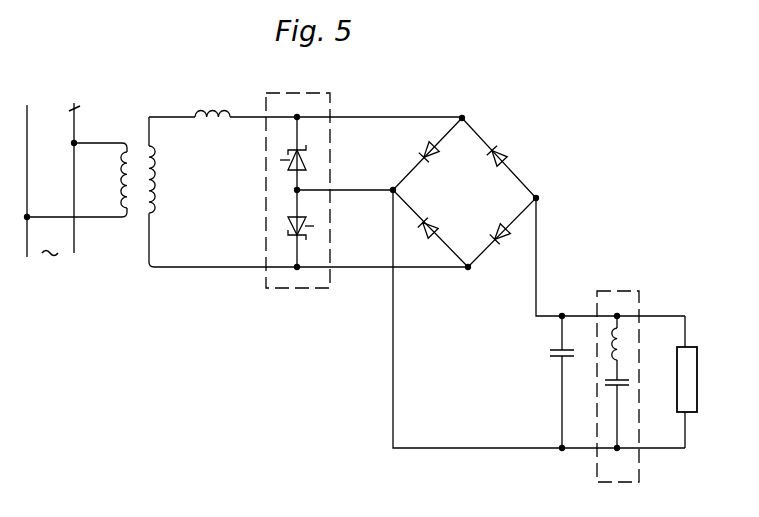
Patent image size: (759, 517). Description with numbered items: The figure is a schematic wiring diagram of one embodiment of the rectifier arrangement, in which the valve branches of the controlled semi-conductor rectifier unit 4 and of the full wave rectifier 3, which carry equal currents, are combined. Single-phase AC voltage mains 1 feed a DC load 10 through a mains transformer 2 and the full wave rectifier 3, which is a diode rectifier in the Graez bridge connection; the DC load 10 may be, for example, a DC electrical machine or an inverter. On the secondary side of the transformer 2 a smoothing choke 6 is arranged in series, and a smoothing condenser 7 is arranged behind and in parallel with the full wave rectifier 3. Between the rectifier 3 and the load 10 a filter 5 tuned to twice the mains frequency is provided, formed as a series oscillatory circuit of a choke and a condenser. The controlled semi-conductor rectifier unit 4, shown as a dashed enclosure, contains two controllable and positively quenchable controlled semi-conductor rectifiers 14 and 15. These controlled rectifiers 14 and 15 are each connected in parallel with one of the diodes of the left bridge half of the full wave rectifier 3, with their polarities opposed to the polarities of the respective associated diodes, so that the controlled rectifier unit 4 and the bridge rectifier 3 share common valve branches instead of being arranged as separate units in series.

The single-phase AC voltage mains 1 is at (76, 104).
The mains transformer 2 is at (141, 132).
The full wave rectifier 3 is at (469, 208).
The controlled semi-conductor rectifier unit 4 is at (329, 183).
The filter 5 is at (622, 284).
The smoothing choke 6 is at (212, 110).
The smoothing condenser 7 is at (556, 357).
The DC load 10 is at (677, 378).
The controllable and quenchable controlled semi-conductor rectifier 14 is at (303, 166).
The controllable and quenchable controlled semi-conductor rectifier 15 is at (303, 218).